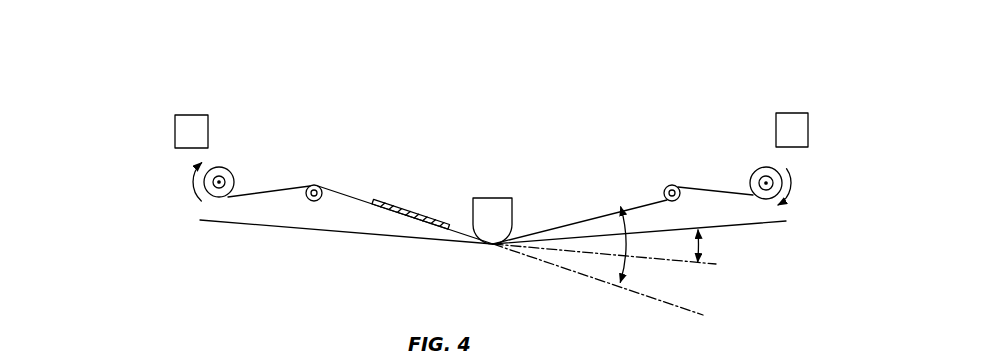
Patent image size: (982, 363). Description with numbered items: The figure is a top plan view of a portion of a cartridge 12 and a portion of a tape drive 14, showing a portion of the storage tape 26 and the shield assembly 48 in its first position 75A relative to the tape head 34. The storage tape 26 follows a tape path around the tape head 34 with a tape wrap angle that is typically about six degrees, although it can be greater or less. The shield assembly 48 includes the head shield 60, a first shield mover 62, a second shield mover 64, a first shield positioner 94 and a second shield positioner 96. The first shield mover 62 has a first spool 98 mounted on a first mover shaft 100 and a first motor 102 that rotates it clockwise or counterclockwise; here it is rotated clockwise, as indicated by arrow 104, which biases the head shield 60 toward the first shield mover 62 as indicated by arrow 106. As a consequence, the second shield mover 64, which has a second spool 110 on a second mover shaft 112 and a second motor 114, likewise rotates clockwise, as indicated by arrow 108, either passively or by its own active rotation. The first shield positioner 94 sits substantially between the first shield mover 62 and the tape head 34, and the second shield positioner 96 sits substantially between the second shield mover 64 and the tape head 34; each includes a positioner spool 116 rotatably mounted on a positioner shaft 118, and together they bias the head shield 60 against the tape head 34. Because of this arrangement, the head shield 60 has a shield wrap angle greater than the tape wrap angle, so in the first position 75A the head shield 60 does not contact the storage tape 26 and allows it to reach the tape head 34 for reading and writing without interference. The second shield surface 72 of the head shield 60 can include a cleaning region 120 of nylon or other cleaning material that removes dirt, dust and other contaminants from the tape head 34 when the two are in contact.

The first motor 102 is at (190, 122).
The first shield mover 62 is at (227, 164).
The first spool 98 is at (234, 179).
The arrow 104 is at (195, 187).
The first mover shaft 100 is at (218, 188).
The positioner spool 116 is at (309, 200).
The positioner shaft 118 is at (314, 201).
The first shield positioner 94 is at (317, 184).
The second shield surface 72 is at (342, 189).
The cleaning region 120 is at (379, 201).
The first position 75A is at (460, 213).
The tape head 34 is at (486, 203).
The head shield 60 is at (459, 238).
The horizontal reference line 12 is at (576, 251).
The tape drive 14 is at (560, 118).
The shield assembly 48 is at (408, 110).
The arrow 106 is at (543, 218).
The second shield positioner 96 is at (669, 182).
The second shield mover 64 is at (758, 168).
The second motor 114 is at (803, 123).
The second spool 110 is at (778, 164).
The arrow 108 is at (792, 185).
The second mover shaft 112 is at (770, 198).
The storage tape 26 is at (746, 225).